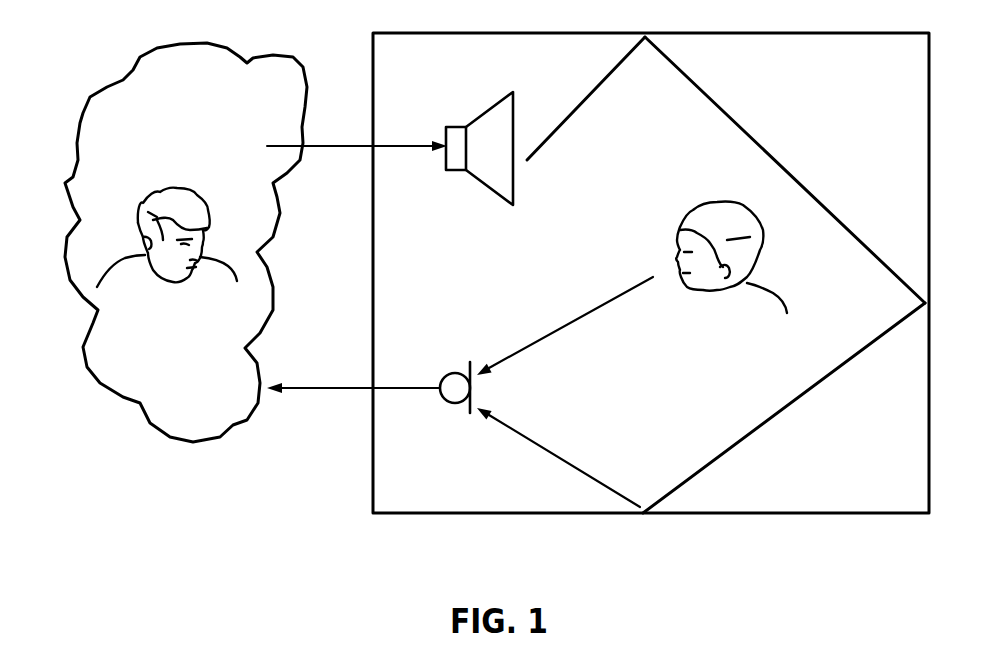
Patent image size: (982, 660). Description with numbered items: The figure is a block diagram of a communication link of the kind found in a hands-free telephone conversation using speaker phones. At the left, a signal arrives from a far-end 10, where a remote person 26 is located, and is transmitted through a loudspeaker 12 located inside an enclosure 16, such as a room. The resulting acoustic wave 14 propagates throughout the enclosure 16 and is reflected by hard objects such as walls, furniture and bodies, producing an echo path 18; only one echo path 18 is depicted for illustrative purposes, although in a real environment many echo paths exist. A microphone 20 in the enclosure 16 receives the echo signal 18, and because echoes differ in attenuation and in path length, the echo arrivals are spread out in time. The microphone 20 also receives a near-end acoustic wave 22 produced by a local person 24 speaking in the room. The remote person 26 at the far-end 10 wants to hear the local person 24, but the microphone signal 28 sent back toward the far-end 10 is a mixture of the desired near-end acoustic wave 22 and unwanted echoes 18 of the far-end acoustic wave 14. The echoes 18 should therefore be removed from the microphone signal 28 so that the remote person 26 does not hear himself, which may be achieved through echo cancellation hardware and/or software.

The far-end 10 is at (213, 167).
The loudspeaker 12 is at (490, 108).
The acoustic wave 14 is at (577, 110).
The enclosure 16 is at (857, 114).
The echo path 18 is at (773, 420).
The microphone 20 is at (458, 372).
The near-end acoustic wave 22 is at (560, 333).
The local person 24 is at (773, 297).
The remote person 26 is at (137, 285).
The microphone signal 28 is at (317, 393).